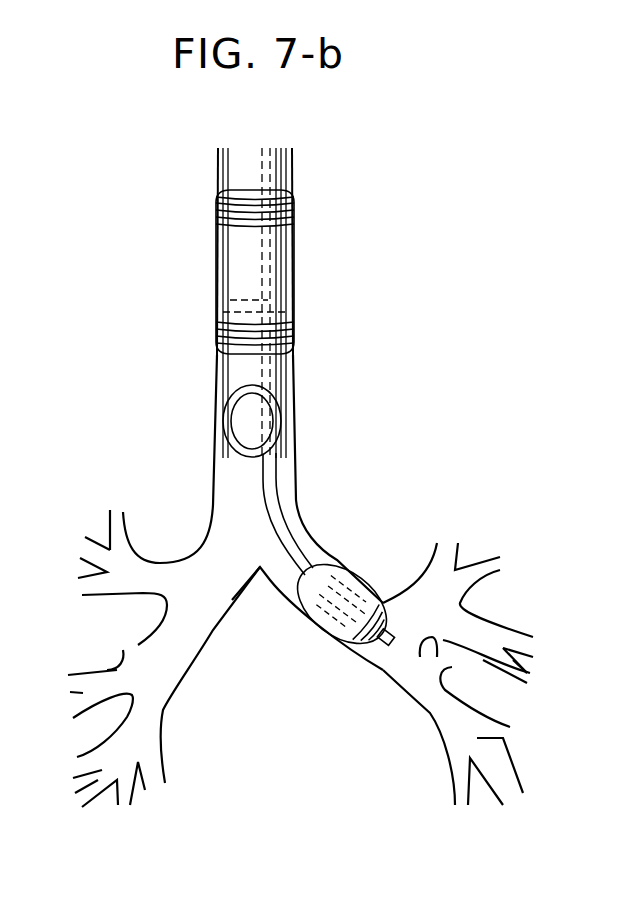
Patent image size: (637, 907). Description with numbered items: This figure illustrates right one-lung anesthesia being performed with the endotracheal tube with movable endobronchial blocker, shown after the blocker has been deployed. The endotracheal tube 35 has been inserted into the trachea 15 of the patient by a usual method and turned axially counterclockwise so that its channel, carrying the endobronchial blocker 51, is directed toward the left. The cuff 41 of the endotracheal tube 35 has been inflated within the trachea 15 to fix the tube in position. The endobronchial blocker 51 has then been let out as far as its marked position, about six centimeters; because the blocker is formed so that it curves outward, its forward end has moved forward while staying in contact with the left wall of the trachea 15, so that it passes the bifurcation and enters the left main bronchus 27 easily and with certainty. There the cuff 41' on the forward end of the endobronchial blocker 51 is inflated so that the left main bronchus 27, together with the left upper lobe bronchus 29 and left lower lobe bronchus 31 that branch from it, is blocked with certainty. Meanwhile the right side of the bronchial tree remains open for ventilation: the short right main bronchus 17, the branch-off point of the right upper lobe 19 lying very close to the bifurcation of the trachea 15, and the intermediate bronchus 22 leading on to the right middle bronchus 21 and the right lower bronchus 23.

The trachea 15 is at (290, 190).
The endotracheal tube 35 is at (273, 170).
The cuff 41 is at (283, 272).
The endobronchial blocker 51 is at (280, 522).
The cuff 41' is at (347, 591).
The right main bronchus 17 is at (193, 588).
The right upper lobe 19 is at (120, 577).
The right middle bronchus 21 is at (115, 683).
The intermediate bronchus 22 is at (175, 650).
The right lower bronchus 23 is at (140, 730).
The left main bronchus 27 is at (287, 583).
The left upper lobe bronchus 29 is at (437, 602).
The left lower lobe bronchus 31 is at (450, 710).